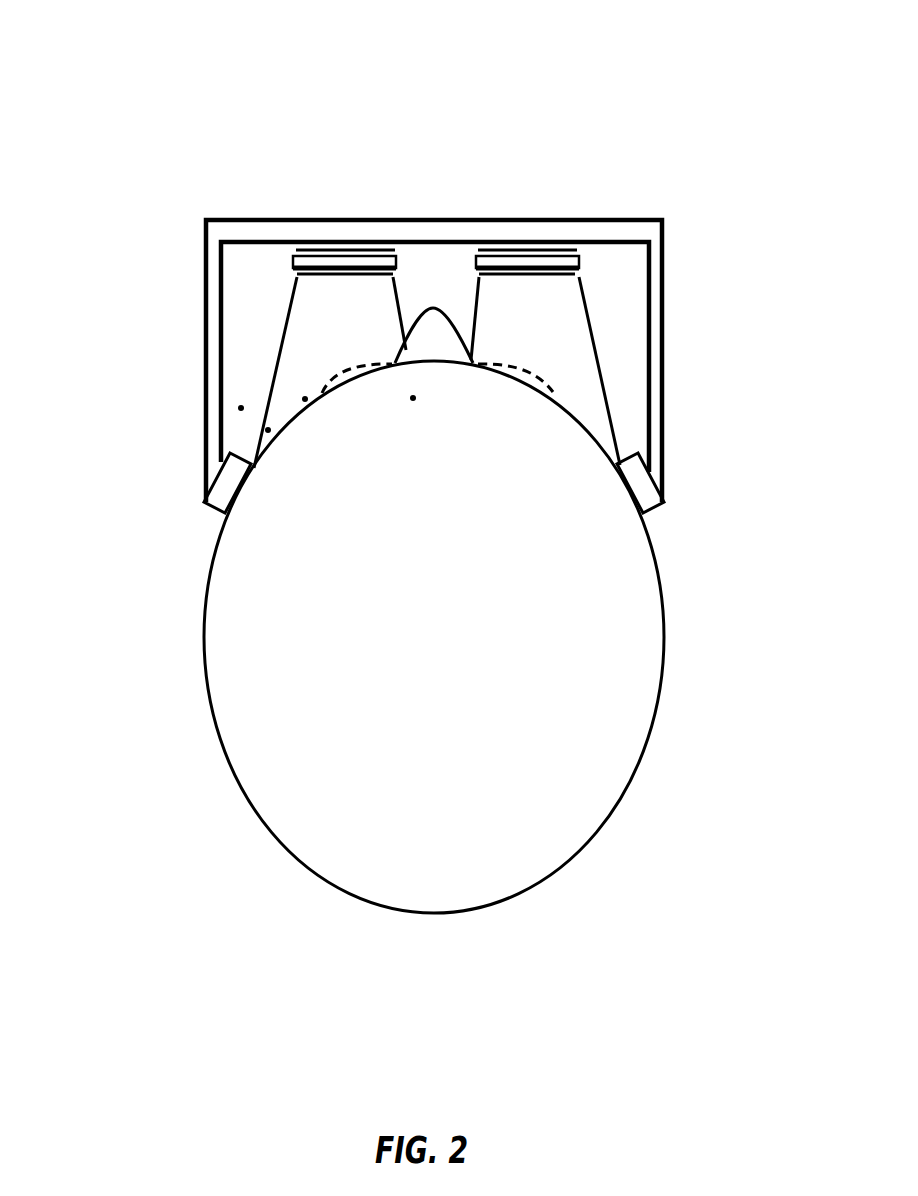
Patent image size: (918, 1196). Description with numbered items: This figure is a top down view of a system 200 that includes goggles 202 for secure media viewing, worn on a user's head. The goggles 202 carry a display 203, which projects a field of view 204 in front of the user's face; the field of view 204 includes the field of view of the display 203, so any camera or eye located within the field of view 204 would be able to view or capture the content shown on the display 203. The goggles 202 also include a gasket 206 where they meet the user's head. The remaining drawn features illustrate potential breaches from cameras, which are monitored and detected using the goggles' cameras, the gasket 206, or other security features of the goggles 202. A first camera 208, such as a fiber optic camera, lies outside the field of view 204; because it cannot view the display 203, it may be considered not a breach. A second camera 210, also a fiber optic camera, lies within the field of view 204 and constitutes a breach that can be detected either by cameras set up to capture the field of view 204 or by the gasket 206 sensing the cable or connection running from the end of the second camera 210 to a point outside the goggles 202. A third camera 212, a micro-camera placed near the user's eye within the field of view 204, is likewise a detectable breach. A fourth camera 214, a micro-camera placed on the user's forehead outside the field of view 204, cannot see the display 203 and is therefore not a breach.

The system 200 is at (686, 39).
The goggles 202 is at (663, 219).
The display 203 is at (295, 276).
The field of view 204 is at (265, 403).
The gasket 206 is at (215, 510).
The first camera 208 is at (241, 408).
The second camera 210 is at (268, 430).
The third camera 212 is at (305, 399).
The fourth camera 214 is at (413, 398).